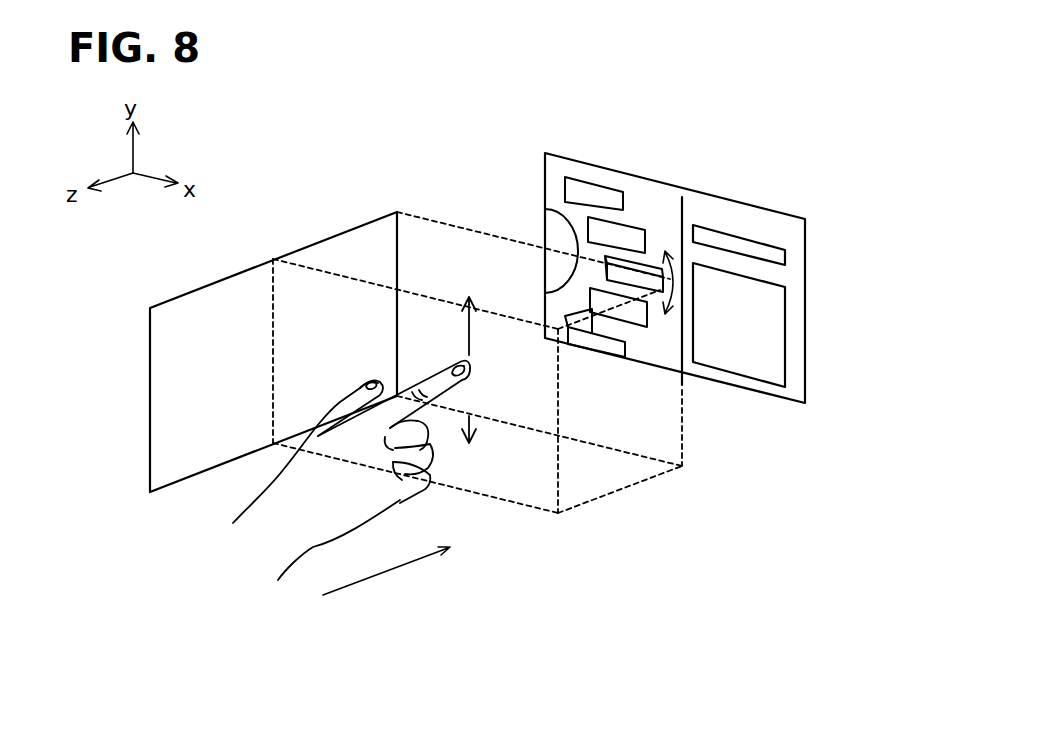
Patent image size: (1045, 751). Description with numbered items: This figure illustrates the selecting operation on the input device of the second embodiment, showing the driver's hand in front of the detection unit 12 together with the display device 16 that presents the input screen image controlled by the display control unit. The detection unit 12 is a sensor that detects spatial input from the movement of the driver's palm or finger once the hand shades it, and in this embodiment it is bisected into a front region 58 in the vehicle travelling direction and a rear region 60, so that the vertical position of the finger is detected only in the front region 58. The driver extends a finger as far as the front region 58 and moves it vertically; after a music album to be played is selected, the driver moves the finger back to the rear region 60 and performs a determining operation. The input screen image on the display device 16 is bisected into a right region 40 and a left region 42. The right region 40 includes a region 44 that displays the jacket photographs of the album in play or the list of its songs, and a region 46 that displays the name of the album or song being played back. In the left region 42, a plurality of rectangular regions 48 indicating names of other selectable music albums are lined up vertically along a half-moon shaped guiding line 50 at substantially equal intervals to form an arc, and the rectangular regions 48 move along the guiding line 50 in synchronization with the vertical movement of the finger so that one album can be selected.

The detection unit 12 is at (150, 418).
The display device 16 is at (760, 203).
The right region 40 is at (686, 383).
The left region 42 is at (548, 345).
The region 44 is at (789, 313).
The region 46 is at (789, 255).
The rectangular regions 48 is at (633, 233).
The half-moon shaped guiding line 50 is at (552, 184).
The front region 58 is at (400, 205).
The rear region 60 is at (274, 252).